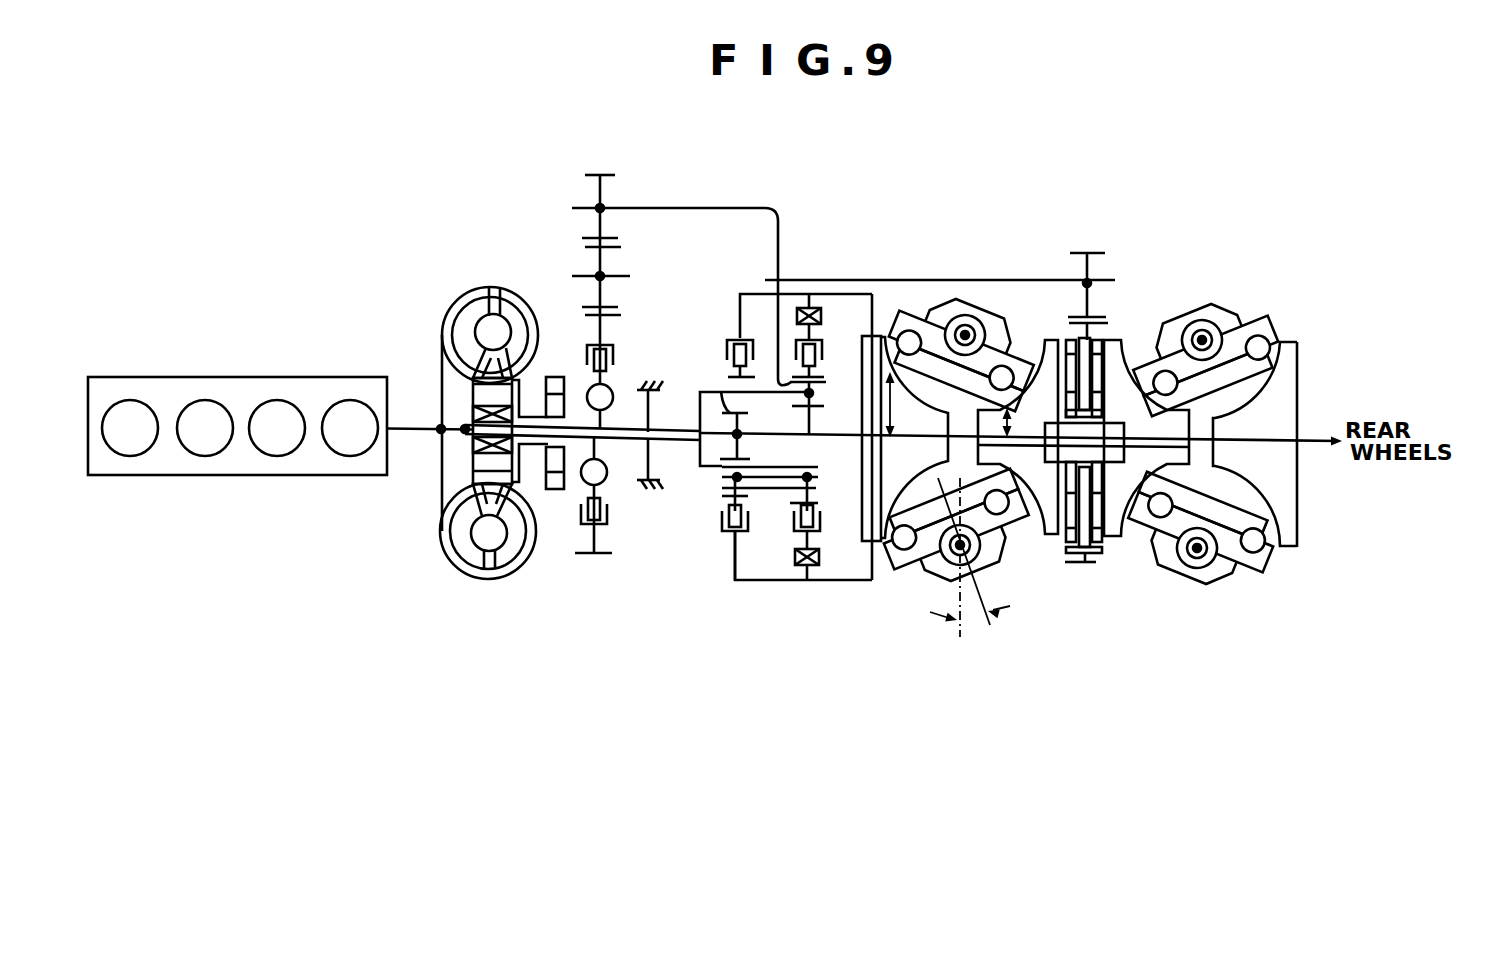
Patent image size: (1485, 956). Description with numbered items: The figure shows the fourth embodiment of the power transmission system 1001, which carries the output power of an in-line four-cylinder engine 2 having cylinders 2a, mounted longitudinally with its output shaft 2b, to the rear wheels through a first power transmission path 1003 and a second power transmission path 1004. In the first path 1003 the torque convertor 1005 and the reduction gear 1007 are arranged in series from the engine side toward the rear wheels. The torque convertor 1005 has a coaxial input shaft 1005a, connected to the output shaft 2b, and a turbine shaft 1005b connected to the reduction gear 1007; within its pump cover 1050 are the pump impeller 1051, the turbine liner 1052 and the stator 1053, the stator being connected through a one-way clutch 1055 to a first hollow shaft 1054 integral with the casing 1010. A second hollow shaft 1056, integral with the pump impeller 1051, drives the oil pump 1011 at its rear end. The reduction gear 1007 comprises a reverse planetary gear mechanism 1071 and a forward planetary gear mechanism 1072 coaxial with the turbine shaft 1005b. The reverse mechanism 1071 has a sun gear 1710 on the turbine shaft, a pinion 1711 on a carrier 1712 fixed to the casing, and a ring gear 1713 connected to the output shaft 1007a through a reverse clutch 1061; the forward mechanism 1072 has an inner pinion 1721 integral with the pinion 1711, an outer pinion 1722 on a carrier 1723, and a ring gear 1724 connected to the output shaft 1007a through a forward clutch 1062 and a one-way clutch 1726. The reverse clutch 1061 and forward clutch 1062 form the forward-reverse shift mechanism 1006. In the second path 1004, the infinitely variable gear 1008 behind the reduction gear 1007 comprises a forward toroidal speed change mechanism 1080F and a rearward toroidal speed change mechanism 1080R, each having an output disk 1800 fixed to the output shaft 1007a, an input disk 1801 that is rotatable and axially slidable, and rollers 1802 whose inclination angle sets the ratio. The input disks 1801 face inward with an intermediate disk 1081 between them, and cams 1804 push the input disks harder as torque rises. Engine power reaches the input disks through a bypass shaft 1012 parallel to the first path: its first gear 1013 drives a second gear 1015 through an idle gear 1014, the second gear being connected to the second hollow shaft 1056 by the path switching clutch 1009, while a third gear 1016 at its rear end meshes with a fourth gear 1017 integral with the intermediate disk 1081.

The engine 2 is at (221, 374).
The cylinders 2a is at (200, 462).
The output shaft 2b is at (399, 418).
The power transmission system 1001 is at (531, 153).
The first power transmission path 1003 is at (795, 438).
The second power transmission path 1004 is at (825, 251).
The torque convertor 1005 is at (517, 462).
The input shaft 1005a is at (433, 417).
The turbine shaft 1005b is at (610, 487).
The forward-reverse shift mechanism 1006 is at (755, 558).
The reduction gear 1007 is at (792, 449).
The output shaft 1007a is at (906, 437).
The infinitely variable gear 1008 is at (1183, 458).
The path switching clutch 1009 is at (585, 358).
The casing 1010 is at (610, 384).
The oil pump 1011 is at (550, 392).
The bypass shaft 1012 is at (650, 207).
The first gear 1013 is at (600, 176).
The idle gear 1014 is at (587, 246).
The second gear 1015 is at (587, 322).
The third gear 1016 is at (1095, 253).
The fourth gear 1017 is at (1095, 328).
The pump cover 1050 is at (440, 495).
The pump impeller 1051 is at (512, 572).
The turbine liner 1052 is at (467, 572).
The stator 1053 is at (460, 505).
The first hollow shaft 1054 is at (532, 480).
The one-way clutch 1055 is at (462, 447).
The second hollow shaft 1056 is at (565, 497).
The reverse clutch 1061 is at (727, 340).
The forward clutch 1062 is at (822, 340).
The reverse planetary gear mechanism 1071 is at (704, 517).
The forward planetary gear mechanism 1072 is at (870, 335).
The forward toroidal speed change mechanism 1080F is at (1085, 500).
The rearward toroidal speed change mechanism 1080R is at (1249, 664).
The intermediate disk 1081 is at (1095, 565).
The sun gear 1710 is at (650, 388).
The pinion 1711 is at (706, 496).
The carrier 1712 is at (650, 492).
The ring gear 1713 is at (723, 390).
The inner pinion 1721 is at (808, 465).
The outer pinion 1722 is at (841, 383).
The carrier 1723 is at (780, 282).
The ring gear 1724 is at (823, 500).
The one-way clutch 1726 is at (797, 566).
The output disk 1800 is at (884, 547).
The input disk 1801 is at (1162, 610).
The rollers 1802 is at (1028, 340).
The cams 1804 is at (1070, 545).